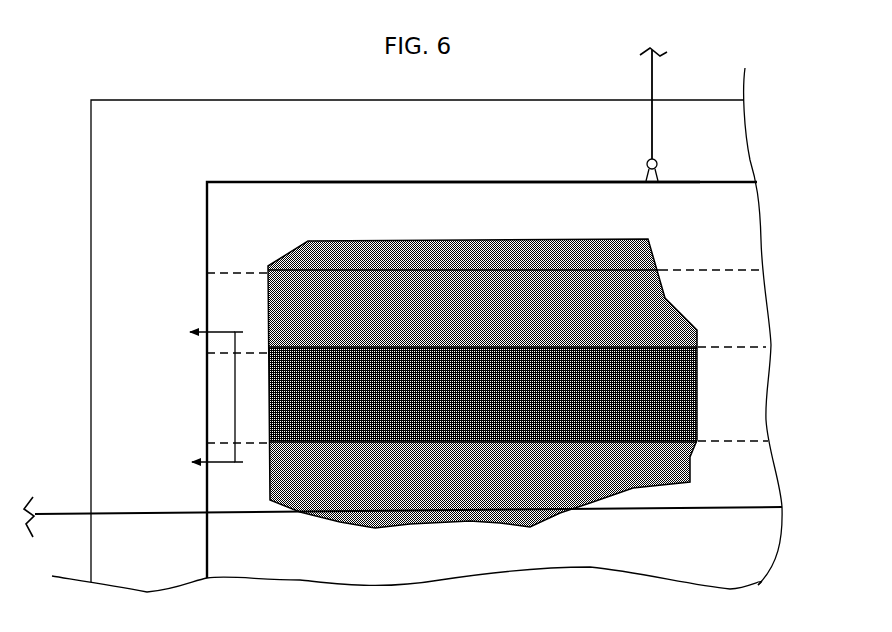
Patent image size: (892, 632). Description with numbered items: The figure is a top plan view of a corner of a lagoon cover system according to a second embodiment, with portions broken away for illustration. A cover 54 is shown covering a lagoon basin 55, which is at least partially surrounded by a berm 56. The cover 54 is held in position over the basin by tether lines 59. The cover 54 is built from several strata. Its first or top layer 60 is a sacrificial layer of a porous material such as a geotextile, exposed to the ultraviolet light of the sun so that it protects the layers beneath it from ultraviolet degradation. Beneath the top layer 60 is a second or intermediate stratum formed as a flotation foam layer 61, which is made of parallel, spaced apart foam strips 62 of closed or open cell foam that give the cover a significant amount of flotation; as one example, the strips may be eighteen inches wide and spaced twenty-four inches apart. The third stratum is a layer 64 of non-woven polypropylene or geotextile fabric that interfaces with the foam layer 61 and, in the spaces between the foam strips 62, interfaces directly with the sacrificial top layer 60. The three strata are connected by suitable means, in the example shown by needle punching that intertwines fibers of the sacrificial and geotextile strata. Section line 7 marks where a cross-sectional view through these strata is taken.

The section line 7 is at (207, 398).
The cover 54 is at (279, 180).
The lagoon basin 55 is at (757, 470).
The berm 56 is at (323, 130).
The tether lines 59 is at (652, 157).
The top layer 60 is at (590, 210).
The flotation foam layer 61 is at (641, 283).
The foam strips 62 is at (290, 292).
The layer of non-woven polypropylene fabric 64 is at (683, 386).